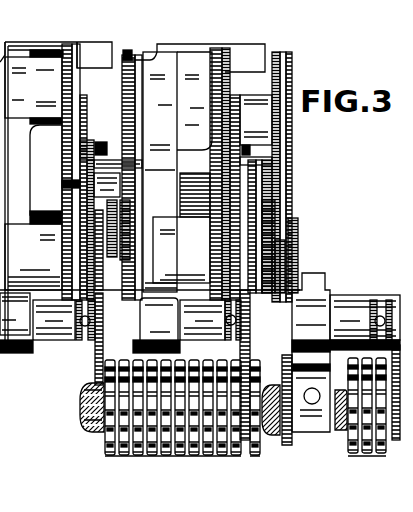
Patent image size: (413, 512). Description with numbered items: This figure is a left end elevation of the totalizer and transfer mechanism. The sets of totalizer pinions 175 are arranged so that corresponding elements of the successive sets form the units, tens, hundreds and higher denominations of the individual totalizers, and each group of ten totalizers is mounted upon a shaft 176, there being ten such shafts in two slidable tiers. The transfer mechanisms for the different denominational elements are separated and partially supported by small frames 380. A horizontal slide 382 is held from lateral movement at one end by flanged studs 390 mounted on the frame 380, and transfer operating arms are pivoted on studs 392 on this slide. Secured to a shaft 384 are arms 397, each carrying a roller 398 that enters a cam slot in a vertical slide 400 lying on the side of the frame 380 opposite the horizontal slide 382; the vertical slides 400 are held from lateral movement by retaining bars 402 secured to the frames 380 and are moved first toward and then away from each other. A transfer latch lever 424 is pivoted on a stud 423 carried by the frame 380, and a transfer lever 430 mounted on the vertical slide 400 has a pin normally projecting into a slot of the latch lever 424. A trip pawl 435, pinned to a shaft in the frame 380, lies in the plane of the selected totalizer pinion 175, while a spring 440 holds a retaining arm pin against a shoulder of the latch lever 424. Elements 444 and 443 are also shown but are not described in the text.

The frame 380 is at (262, 52).
The flanged stud 390 is at (76, 60).
The retaining bar 402 is at (128, 78).
The transfer latch lever 424 is at (88, 98).
The vertical slide 400 is at (137, 110).
The transfer lever 430 is at (103, 142).
The clutch member 444 is at (83, 150).
The stud 392 is at (58, 186).
The horizontal slide 382 is at (67, 204).
The clutch collar 443 is at (130, 222).
The spring 440 is at (130, 244).
The stud 423 is at (268, 154).
The roller 398 is at (292, 238).
The arm 397 is at (294, 250).
The trip pawl 435 is at (393, 295).
The shaft 176 is at (86, 428).
The totalizer pinion 175 is at (218, 455).
The shaft 384 is at (352, 450).